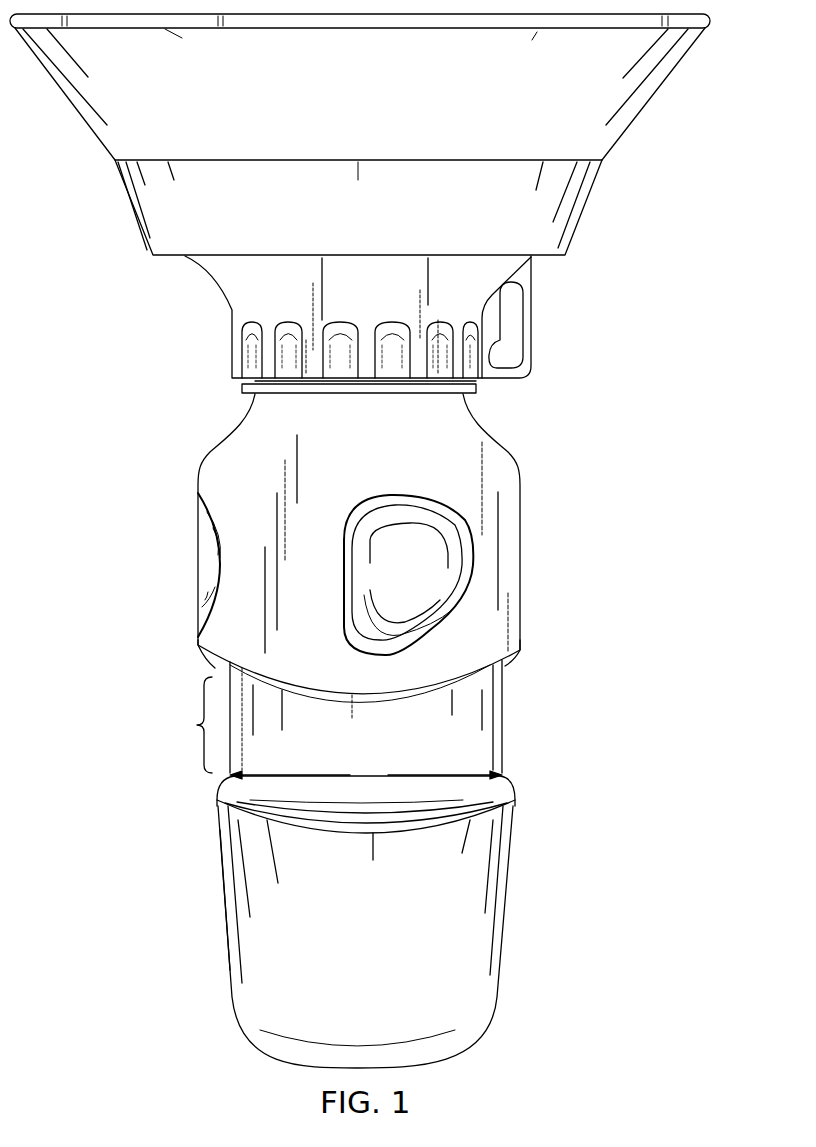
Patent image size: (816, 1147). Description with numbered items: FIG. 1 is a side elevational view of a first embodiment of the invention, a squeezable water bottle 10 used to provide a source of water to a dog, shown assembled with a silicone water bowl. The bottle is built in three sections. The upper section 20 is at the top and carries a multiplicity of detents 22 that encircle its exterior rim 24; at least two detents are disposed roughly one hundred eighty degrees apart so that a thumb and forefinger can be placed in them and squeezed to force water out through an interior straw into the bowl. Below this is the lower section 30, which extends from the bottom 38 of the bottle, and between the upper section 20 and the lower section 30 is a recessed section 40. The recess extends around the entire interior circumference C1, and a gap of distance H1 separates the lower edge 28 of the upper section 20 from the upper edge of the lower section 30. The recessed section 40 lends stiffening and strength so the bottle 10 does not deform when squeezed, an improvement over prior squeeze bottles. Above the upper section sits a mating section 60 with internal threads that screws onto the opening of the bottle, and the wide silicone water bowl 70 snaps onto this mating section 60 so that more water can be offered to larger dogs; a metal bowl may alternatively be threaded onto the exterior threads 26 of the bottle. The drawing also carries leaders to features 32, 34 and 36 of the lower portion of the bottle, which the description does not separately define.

The first embodiment water bottle 10 is at (360, 541).
The upper section 20 is at (238, 454).
The detent 22 is at (220, 562).
The exterior rim 24 is at (198, 645).
The exterior threads 26 is at (245, 383).
The lower edge 28 is at (314, 692).
The lower section 30 is at (488, 912).
The body lower rim 32 is at (515, 666).
The container side wall 34 is at (235, 900).
The cap ring 36 is at (515, 788).
The bottom 38 is at (473, 1027).
The recessed section 40 is at (503, 723).
The mating section 60 is at (233, 293).
The water bowl 70 is at (627, 119).
The gap distance H1 is at (192, 725).
The interior circumference C1 is at (366, 777).